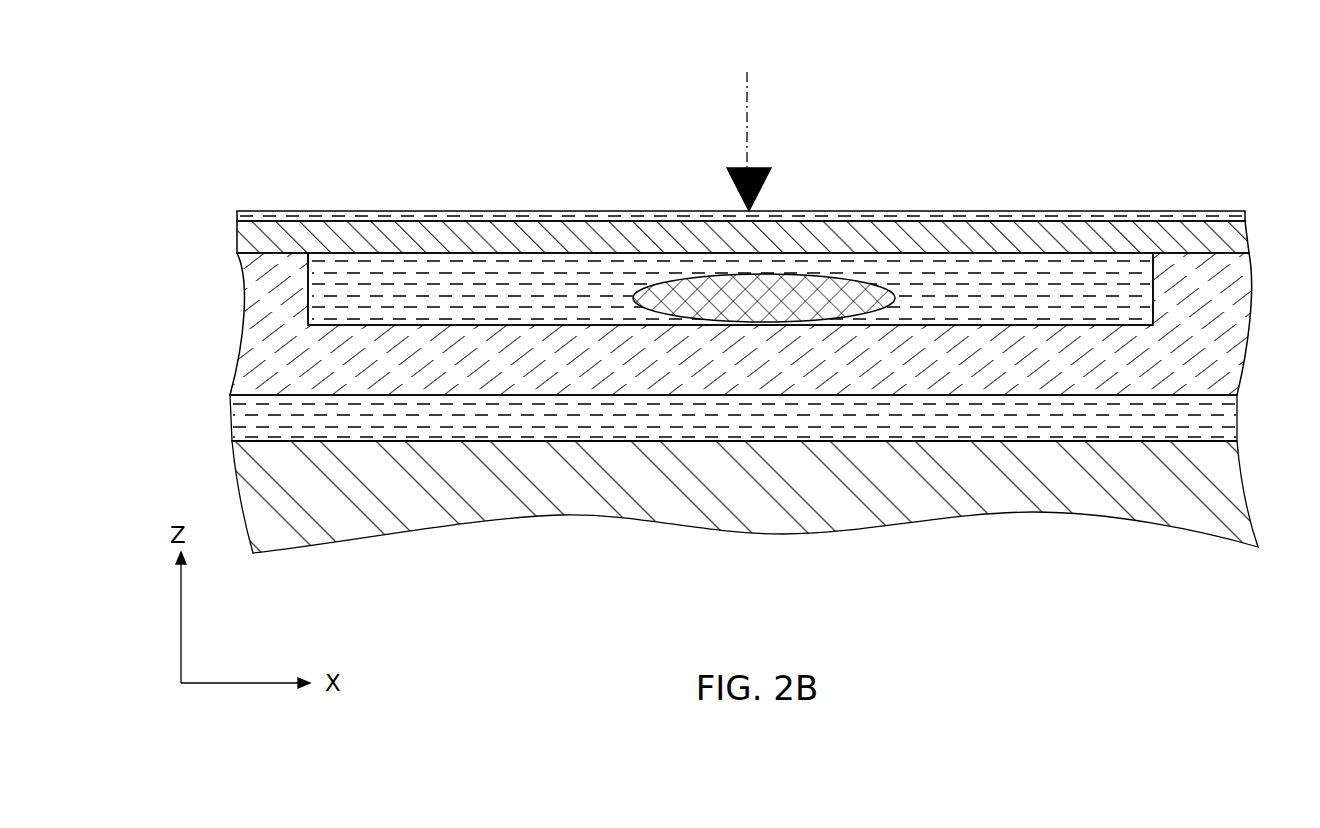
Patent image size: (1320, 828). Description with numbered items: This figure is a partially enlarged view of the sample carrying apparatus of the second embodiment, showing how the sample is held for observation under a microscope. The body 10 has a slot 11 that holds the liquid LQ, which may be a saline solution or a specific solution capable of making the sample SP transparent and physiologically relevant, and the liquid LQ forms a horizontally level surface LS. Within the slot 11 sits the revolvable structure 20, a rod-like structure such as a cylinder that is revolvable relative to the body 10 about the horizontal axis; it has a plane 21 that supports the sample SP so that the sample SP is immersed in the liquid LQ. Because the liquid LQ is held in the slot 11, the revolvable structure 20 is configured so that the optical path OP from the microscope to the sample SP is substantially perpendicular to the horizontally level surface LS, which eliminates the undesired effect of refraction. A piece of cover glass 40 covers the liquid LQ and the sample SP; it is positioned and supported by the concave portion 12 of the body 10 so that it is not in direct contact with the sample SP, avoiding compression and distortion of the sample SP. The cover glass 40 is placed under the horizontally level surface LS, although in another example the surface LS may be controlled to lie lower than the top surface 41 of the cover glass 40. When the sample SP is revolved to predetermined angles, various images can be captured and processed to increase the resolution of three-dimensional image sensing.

The body 10 is at (248, 490).
The slot 11 is at (243, 420).
The concave portion 12 is at (232, 436).
The revolvable structure 20 is at (248, 292).
The plane 21 is at (977, 320).
The cover glass 40 is at (575, 237).
The top surface 41 is at (433, 221).
The horizontally level surface LS is at (533, 212).
The liquid LQ is at (1057, 262).
The sample SP is at (818, 295).
The optical path OP is at (747, 90).